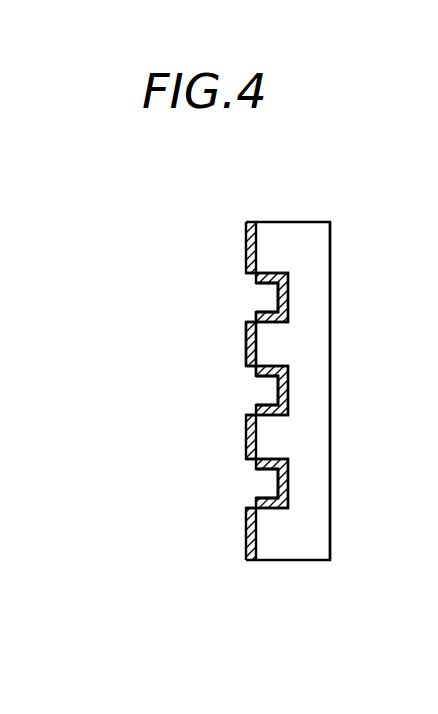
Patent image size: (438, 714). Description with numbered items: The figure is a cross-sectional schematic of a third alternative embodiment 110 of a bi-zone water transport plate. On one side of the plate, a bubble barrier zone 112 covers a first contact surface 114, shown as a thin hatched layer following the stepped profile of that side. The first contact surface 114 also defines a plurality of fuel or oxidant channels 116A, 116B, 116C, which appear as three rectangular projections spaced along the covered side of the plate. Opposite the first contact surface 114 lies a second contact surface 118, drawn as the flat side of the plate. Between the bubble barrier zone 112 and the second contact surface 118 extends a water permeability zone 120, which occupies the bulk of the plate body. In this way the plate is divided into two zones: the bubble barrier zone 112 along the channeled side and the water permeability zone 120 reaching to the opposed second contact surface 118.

The third alternative embodiment of a bi-zone water transport plate 110 is at (337, 198).
The bubble barrier zone 112 is at (246, 240).
The first contact surface 114 is at (246, 345).
The fuel or oxidant channel 116A is at (247, 300).
The fuel or oxidant channel 116B is at (247, 392).
The fuel or oxidant channel 116C is at (247, 484).
The second contact surface 118 is at (330, 430).
The water permeability zone 120 is at (310, 358).